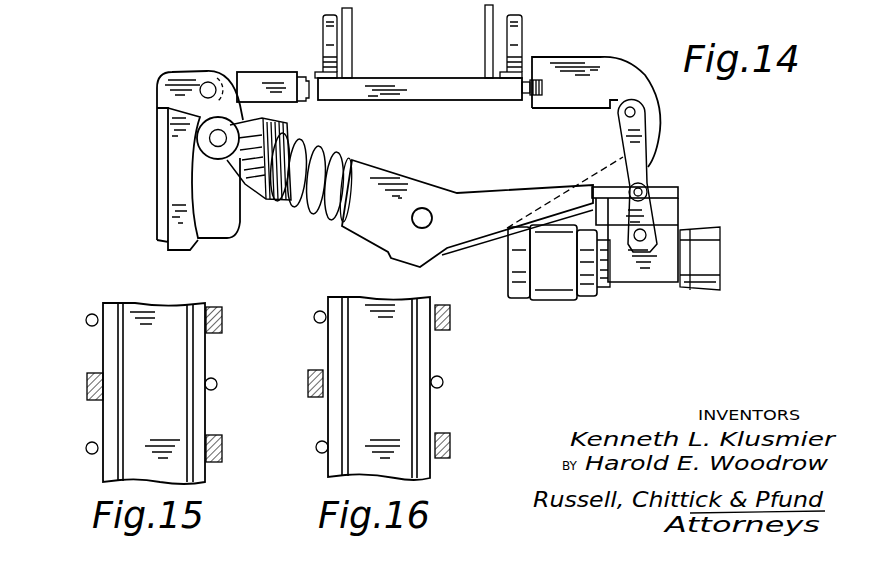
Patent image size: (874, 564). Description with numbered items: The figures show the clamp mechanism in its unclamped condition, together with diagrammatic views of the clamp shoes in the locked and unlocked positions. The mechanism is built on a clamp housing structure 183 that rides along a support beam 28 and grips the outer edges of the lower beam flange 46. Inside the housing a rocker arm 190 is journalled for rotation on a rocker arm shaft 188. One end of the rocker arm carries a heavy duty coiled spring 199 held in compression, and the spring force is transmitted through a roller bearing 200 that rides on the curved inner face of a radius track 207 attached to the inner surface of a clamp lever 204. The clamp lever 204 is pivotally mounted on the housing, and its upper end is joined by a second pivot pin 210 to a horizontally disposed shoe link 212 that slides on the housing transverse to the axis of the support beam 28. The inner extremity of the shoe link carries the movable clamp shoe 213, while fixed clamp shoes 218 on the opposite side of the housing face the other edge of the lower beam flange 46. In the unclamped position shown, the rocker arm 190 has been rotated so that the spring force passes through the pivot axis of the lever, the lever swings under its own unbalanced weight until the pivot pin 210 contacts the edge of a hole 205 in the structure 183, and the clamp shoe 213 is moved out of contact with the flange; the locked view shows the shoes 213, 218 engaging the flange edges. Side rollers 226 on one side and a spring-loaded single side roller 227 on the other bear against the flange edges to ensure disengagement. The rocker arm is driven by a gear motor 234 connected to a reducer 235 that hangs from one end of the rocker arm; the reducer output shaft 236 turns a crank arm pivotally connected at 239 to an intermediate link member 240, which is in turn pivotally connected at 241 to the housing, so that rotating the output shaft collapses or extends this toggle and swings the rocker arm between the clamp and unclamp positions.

In FIG. 14, the support beam 28 is at (433, 46).
In FIG. 14, the lower beam flange 46 is at (441, 89).
In FIG. 15, the lower beam flange 46 is at (103, 349).
In FIG. 16, the lower beam flange 46 is at (328, 346).
In FIG. 14, the clamp housing structure 183 is at (616, 66).
In FIG. 14, the rocker arm shaft 188 is at (434, 215).
In FIG. 14, the rocker arm 190 is at (365, 225).
In FIG. 14, the coiled spring 199 is at (336, 154).
In FIG. 14, the roller bearing 200 is at (213, 160).
In FIG. 14, the clamp lever 204 is at (226, 236).
In FIG. 14, the hole 205 is at (223, 72).
In FIG. 14, the radius track 207 is at (182, 240).
In FIG. 14, the second pivot pin 210 is at (203, 84).
In FIG. 14, the shoe link 212 is at (258, 77).
In FIG. 14, the clamp shoe 213 is at (302, 76).
In FIG. 15, the clamp shoe 213 is at (87, 385).
In FIG. 16, the clamp shoe 213 is at (308, 382).
In FIG. 14, the fixed clamp shoes 218 is at (417, 41).
In FIG. 15, the fixed clamp shoes 218 is at (222, 312).
In FIG. 16, the fixed clamp shoes 218 is at (450, 312).
In FIG. 14, the side rollers 226 is at (422, 43).
In FIG. 15, the side rollers 226 is at (86, 320).
In FIG. 16, the side rollers 226 is at (314, 317).
In FIG. 14, the single side roller 227 is at (546, 87).
In FIG. 15, the single side roller 227 is at (216, 389).
In FIG. 16, the single side roller 227 is at (443, 382).
In FIG. 14, the gear motor 234 is at (550, 294).
In FIG. 14, the reducer 235 is at (618, 272).
In FIG. 14, the output shaft 236 is at (645, 233).
In FIG. 14, the pivot connection 239 is at (644, 189).
In FIG. 14, the intermediate link member 240 is at (627, 158).
In FIG. 14, the pivot connection 241 is at (624, 115).